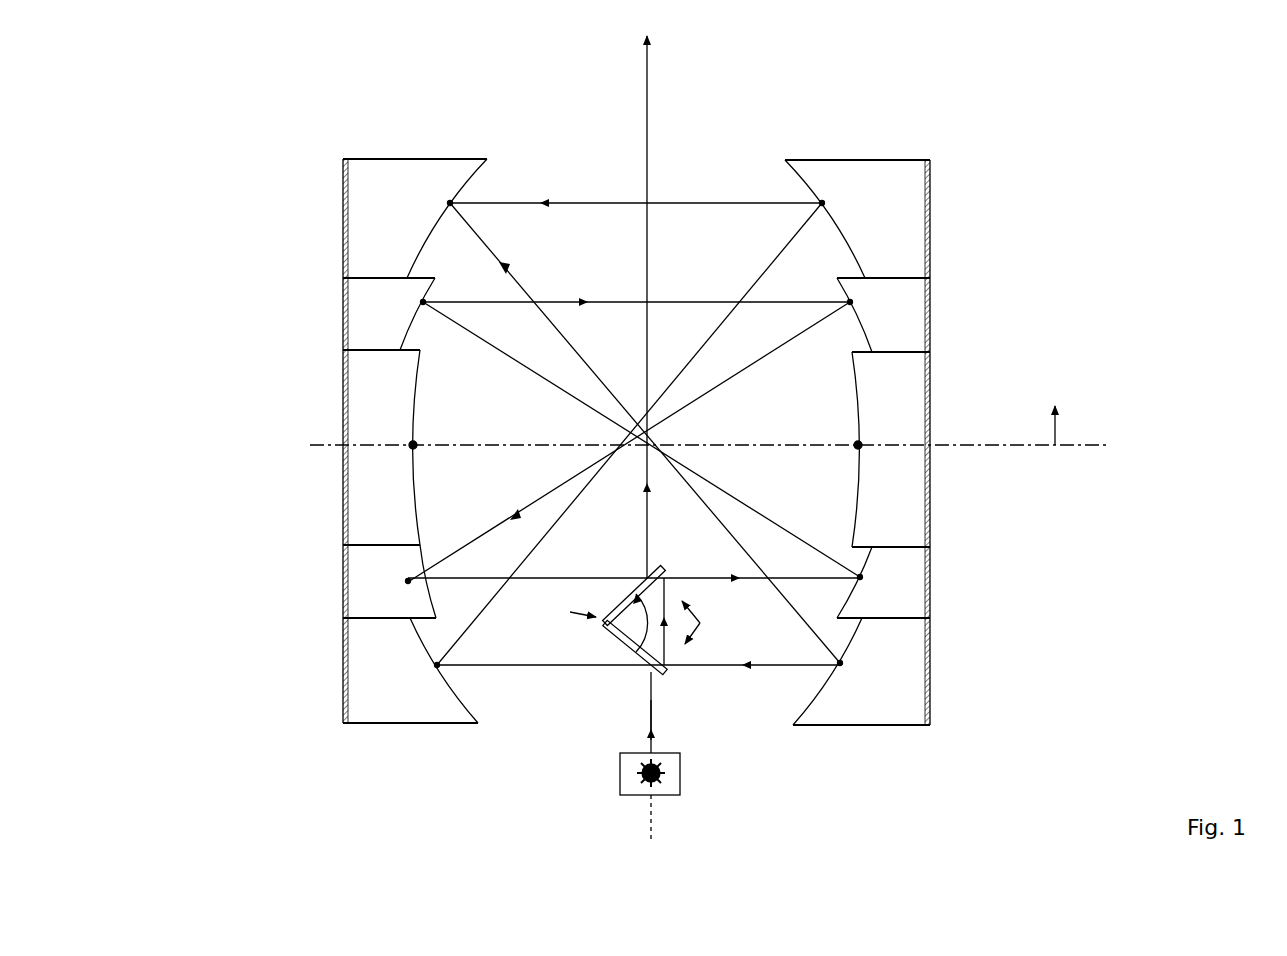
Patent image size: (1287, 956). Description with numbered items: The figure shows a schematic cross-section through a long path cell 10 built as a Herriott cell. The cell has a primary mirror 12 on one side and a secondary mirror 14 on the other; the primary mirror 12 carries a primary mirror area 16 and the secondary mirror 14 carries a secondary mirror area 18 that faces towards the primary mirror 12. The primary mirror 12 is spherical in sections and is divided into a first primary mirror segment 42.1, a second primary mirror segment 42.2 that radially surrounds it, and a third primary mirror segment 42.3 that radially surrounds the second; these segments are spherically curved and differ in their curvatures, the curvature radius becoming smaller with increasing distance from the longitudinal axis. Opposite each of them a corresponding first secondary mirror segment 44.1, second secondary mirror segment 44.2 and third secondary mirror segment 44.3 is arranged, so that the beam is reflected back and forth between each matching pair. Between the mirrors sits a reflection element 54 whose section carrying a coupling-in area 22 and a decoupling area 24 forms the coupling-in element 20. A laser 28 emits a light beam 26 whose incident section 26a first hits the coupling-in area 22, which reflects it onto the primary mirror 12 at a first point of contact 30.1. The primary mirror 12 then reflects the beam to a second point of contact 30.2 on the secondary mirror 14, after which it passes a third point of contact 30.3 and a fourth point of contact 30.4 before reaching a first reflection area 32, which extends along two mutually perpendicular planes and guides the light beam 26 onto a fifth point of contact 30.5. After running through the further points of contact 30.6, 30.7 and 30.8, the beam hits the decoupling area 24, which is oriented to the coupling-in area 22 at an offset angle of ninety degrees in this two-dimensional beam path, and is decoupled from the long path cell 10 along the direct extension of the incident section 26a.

The long path cell 10 is at (1134, 85).
The primary mirror 12 is at (343, 185).
The secondary mirror 14 is at (932, 210).
The primary mirror area 16 is at (755, 180).
The secondary mirror area 18 is at (534, 180).
The coupling-in element 20 is at (667, 674).
The coupling-in area 22 is at (640, 662).
The decoupling area 24 is at (663, 566).
The light beam 26 is at (648, 722).
The incident section of the light beam 26a is at (675, 720).
The laser 28 is at (682, 775).
The first point of contact 30.1 is at (436, 665).
The second point of contact 30.2 is at (825, 203).
The third point of contact 30.3 is at (448, 203).
The fourth point of contact 30.4 is at (842, 664).
The fifth point of contact 30.5 is at (876, 575).
The sixth point of contact 30.6 is at (422, 302).
The seventh point of contact 30.7 is at (852, 302).
The eighth point of contact 30.8 is at (388, 598).
The first reflection area 32 is at (706, 622).
The first primary mirror segment 42.1 is at (355, 478).
The second primary mirror segment 42.2 is at (380, 317).
The third primary mirror segment 42.3 is at (380, 238).
The first secondary mirror segment 44.1 is at (912, 405).
The second secondary mirror segment 44.2 is at (912, 317).
The third secondary mirror segment 44.3 is at (912, 246).
The reflection element 54 is at (564, 608).